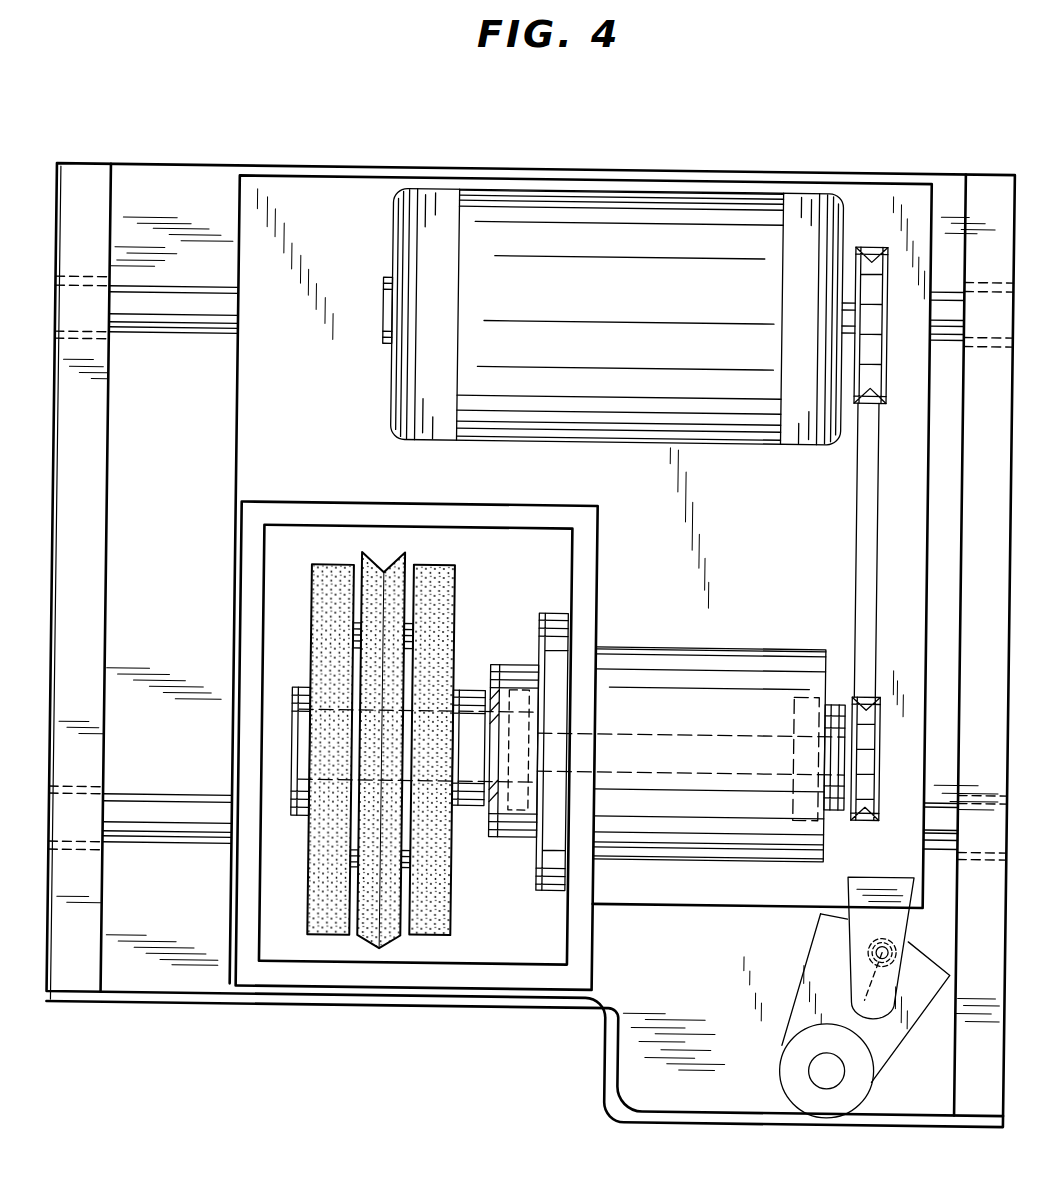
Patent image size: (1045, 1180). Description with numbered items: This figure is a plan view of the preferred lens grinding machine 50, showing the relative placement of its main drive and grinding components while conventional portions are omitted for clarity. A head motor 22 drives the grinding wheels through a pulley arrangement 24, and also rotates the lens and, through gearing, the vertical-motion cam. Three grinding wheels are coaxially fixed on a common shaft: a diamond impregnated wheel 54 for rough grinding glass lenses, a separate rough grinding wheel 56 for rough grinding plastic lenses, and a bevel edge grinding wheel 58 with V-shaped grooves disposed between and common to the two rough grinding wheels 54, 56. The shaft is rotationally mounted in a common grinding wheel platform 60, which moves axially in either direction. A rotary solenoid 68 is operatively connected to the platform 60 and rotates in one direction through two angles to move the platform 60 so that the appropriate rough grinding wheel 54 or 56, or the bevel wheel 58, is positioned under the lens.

The motor 22 is at (707, 441).
The pulley arrangement 24 is at (853, 529).
The lens grinding machine 50 is at (224, 601).
The diamond impregnated grinding wheel 54 is at (311, 581).
The rough grinding wheel 56 is at (440, 580).
The bevel edge grinding wheel 58 is at (377, 572).
The grinding wheel platform 60 is at (685, 908).
The rotary solenoid 68 is at (806, 986).